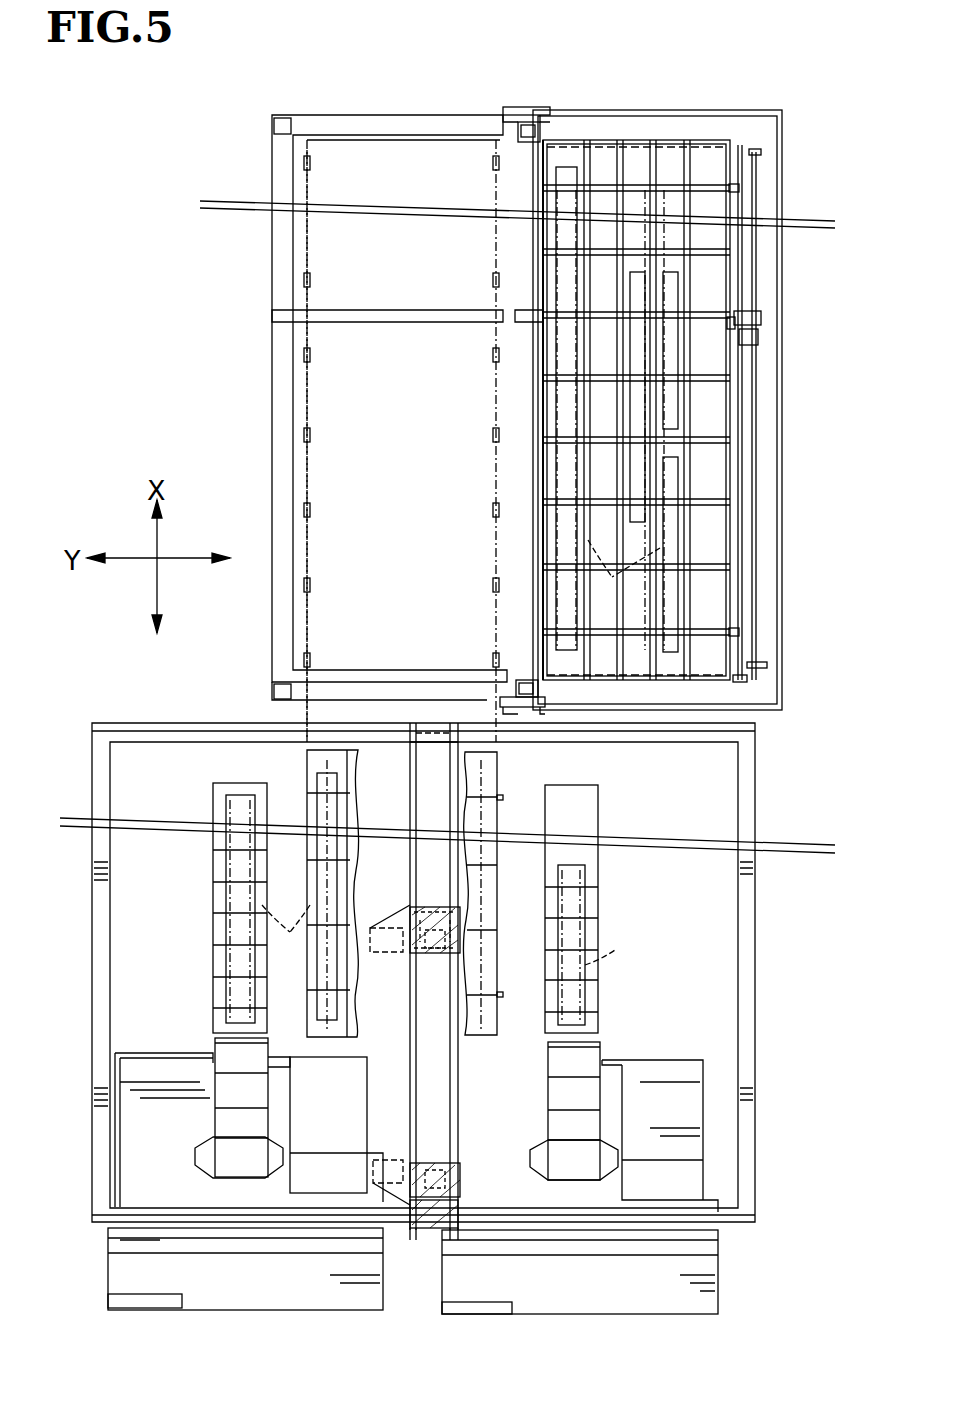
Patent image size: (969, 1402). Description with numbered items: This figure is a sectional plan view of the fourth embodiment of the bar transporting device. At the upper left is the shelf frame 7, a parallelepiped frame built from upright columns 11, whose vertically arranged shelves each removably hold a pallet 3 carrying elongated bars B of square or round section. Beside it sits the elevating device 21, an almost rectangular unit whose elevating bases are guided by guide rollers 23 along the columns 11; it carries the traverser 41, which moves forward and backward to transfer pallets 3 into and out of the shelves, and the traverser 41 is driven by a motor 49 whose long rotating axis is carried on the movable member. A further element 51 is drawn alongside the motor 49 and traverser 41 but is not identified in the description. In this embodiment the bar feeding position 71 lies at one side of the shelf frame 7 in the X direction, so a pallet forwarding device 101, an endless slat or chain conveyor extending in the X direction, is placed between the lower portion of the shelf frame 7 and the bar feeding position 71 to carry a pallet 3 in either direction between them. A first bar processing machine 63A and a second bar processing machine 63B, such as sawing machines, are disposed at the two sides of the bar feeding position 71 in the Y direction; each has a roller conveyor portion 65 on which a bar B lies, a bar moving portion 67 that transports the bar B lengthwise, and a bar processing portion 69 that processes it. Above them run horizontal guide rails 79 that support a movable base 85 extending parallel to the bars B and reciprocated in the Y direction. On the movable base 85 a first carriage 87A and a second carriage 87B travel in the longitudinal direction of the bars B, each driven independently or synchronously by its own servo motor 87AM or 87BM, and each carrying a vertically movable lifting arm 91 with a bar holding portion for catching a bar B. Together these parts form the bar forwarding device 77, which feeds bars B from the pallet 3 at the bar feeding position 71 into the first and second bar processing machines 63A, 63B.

The shelf frame 7 is at (381, 115).
The elevating device 21 is at (681, 109).
The upright columns 11 is at (283, 118).
The guide rollers 23 is at (538, 108).
The traverser 41 is at (768, 432).
The drive rod 51 is at (758, 365).
The motor 49 is at (762, 333).
The pallet forwarding device 101 is at (307, 421).
The pallet 3 is at (541, 472).
The bars B is at (461, 752).
The horizontal guide rails 79 is at (152, 723).
The movable base 85 is at (418, 1115).
The bar feeding position 71 is at (398, 909).
The first carriage 87A is at (430, 907).
The servo motor 87AM is at (385, 952).
The lifting arm 91 is at (445, 942).
The second carriage 87B is at (462, 1200).
The servo motor 87BM is at (390, 1160).
The roller conveyor portion 65 is at (212, 921).
The bar moving portion 67 is at (212, 1128).
The first bar processing machine 63A is at (201, 1053).
The second bar processing machine 63B is at (614, 1055).
The bar processing portion 69 is at (300, 1193).
The bar forwarding device 77 is at (410, 1236).